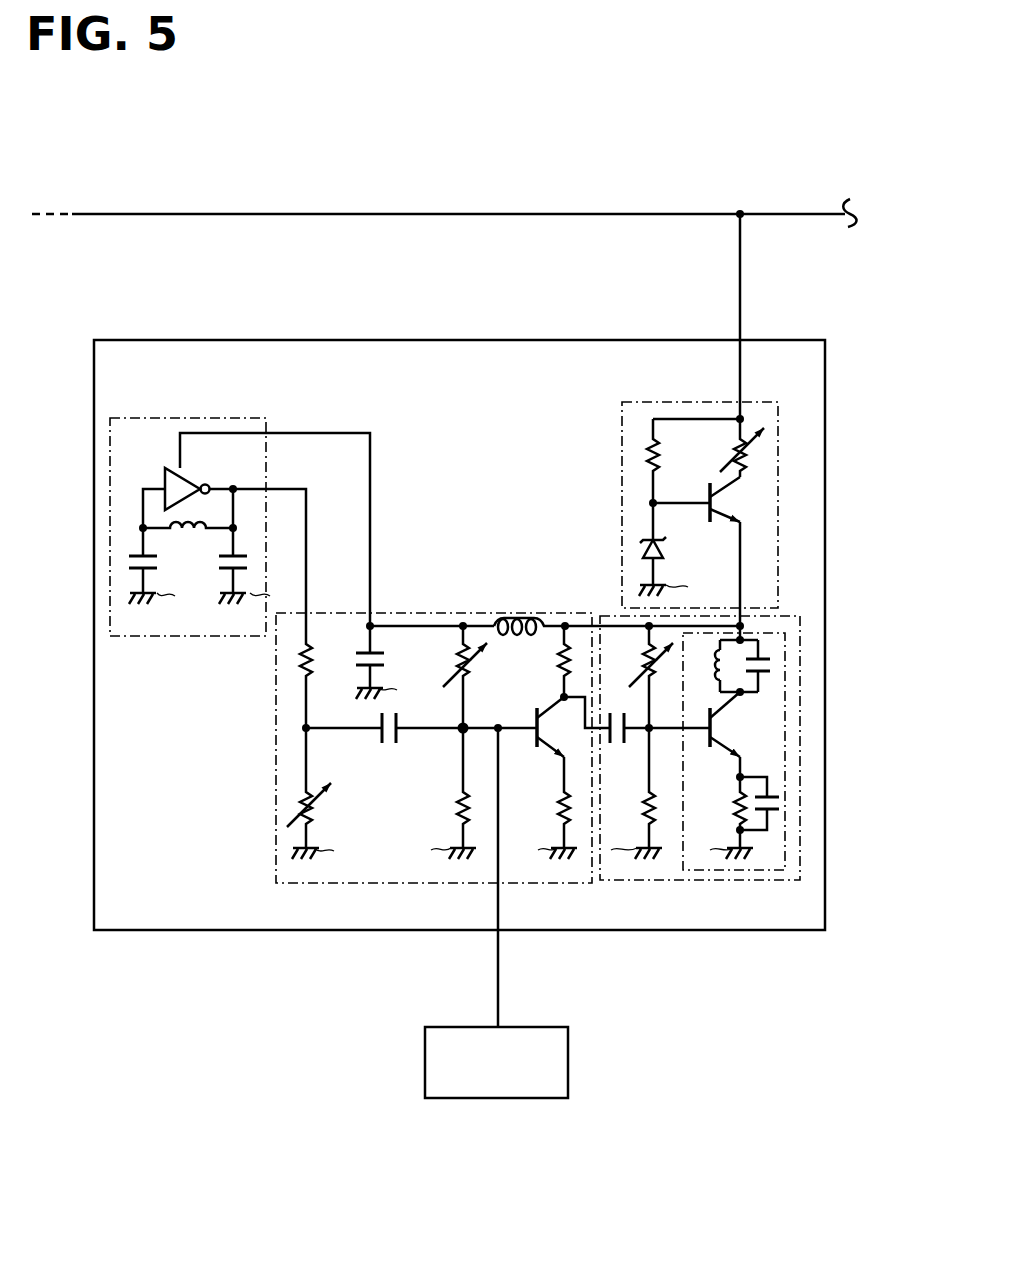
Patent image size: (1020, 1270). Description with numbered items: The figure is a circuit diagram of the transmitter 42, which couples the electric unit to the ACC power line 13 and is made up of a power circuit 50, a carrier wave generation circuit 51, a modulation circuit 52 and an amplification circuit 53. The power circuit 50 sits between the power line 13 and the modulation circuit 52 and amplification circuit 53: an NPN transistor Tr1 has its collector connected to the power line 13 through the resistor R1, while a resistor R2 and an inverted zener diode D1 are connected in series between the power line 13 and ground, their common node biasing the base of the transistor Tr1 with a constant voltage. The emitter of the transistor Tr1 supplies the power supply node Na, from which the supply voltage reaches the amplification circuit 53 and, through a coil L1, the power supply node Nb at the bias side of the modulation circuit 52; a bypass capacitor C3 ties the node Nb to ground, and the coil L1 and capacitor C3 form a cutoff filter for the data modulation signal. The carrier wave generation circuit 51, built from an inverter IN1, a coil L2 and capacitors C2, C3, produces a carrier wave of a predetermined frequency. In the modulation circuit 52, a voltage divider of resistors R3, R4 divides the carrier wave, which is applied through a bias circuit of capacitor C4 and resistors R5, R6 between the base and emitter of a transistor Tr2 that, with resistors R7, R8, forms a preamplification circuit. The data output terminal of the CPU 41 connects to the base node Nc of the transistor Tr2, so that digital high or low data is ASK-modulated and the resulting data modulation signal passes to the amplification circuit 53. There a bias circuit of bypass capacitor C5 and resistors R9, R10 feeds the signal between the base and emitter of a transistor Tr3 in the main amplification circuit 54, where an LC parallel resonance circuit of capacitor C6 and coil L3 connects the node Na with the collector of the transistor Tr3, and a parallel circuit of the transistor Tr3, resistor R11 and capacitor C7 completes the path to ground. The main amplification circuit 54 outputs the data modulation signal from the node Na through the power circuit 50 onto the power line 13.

The ACC power line 13 is at (171, 214).
The CPU 41 is at (568, 1062).
The transmitter 42 is at (454, 340).
The power circuit 50 is at (687, 402).
The carrier wave generation circuit 51 is at (190, 418).
The modulation circuit 52 is at (276, 729).
The amplification circuit 53 is at (697, 880).
The main amplification circuit 54 is at (737, 870).
The resistor R1 is at (748, 454).
The resistor R2 is at (648, 452).
The resistor R3 is at (314, 652).
The resistor R4 is at (317, 814).
The resistor R5 is at (443, 673).
The resistor R6 is at (456, 807).
The resistor R7 is at (558, 666).
The resistor R8 is at (559, 807).
The resistor R9 is at (640, 673).
The resistor R10 is at (646, 808).
The resistor R11 is at (736, 808).
The capacitor C2 is at (140, 568).
The bypass capacitor C3 is at (223, 574).
The capacitor C4 is at (389, 746).
The bypass capacitor C5 is at (622, 744).
The capacitor C6 is at (762, 680).
The capacitor C7 is at (774, 790).
The coil L1 is at (518, 614).
The coil L2 is at (186, 540).
The coil L3 is at (714, 660).
The zener diode D1 is at (648, 540).
The inverter IN1 is at (195, 480).
The NPN transistor Tr1 is at (710, 518).
The transistor Tr2 is at (530, 735).
The transistor Tr3 is at (703, 733).
The power supply node Na is at (742, 624).
The power supply node Nb is at (463, 626).
The base node Nc is at (498, 728).